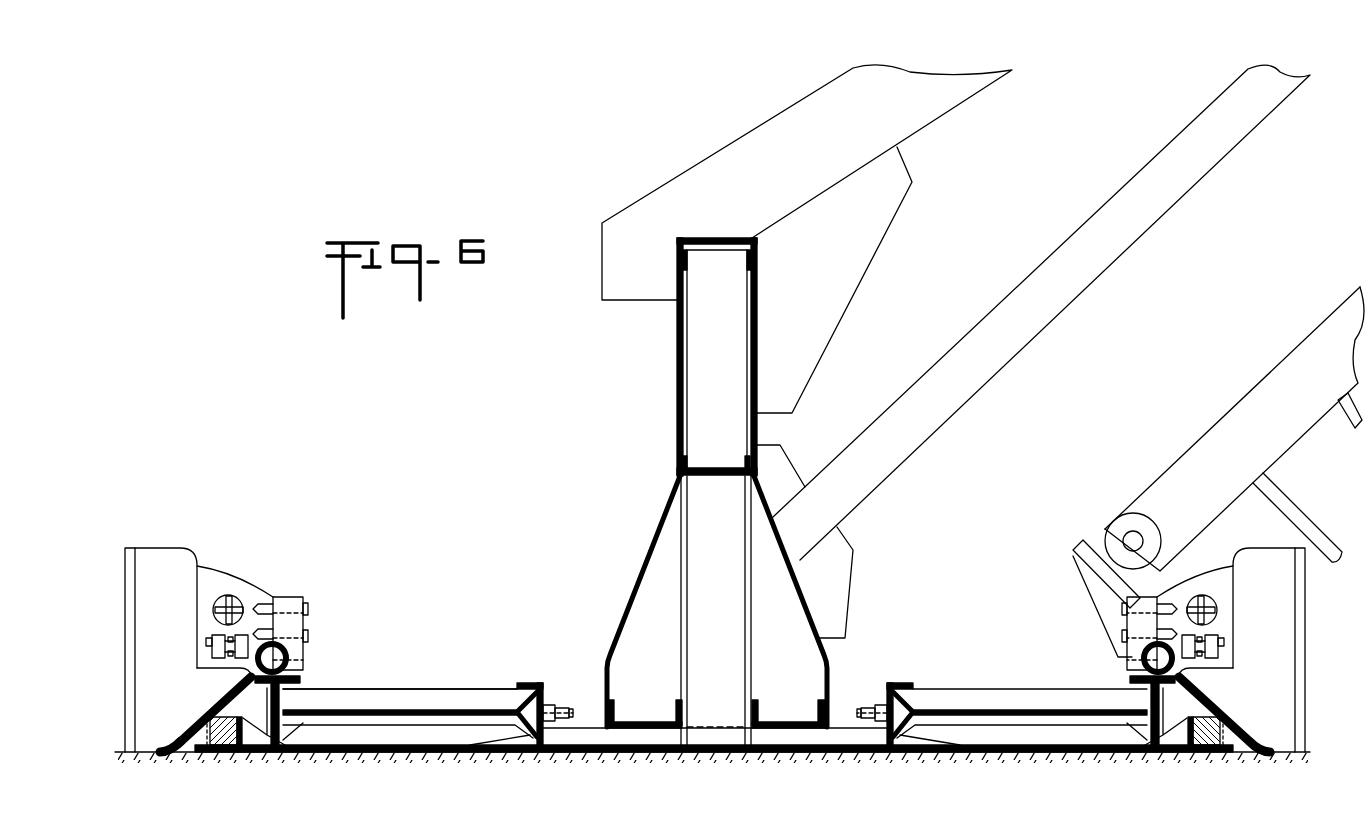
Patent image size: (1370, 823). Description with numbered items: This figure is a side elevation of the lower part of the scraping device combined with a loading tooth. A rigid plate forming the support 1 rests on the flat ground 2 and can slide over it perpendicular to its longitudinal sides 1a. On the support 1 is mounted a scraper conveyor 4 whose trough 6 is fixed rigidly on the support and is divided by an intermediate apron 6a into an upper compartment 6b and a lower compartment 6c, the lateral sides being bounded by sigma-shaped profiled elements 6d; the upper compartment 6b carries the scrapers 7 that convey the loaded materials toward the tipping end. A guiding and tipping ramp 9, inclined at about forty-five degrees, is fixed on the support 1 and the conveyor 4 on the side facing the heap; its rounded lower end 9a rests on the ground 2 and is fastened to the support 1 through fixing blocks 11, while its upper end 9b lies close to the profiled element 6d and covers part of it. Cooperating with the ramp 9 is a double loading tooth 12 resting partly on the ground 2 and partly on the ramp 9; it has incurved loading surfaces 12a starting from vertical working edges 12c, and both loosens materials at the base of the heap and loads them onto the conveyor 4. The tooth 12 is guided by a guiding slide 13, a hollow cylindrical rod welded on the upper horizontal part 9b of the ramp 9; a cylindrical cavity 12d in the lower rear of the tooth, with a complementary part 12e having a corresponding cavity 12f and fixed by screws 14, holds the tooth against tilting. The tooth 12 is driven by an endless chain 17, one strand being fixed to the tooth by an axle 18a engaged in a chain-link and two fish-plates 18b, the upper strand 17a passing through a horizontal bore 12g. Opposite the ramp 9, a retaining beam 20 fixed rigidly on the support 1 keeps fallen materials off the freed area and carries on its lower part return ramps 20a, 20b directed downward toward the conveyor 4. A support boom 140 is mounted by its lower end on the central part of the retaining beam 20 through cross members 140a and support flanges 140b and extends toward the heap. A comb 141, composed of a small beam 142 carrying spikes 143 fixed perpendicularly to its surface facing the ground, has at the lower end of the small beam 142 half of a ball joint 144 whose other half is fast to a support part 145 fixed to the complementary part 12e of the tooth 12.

The support 1 is at (412, 749).
The longitudinal sides of the support 1a is at (218, 752).
The ground 2 is at (465, 755).
The scraper conveyor 4 is at (410, 686).
The trough 6 is at (496, 703).
The intermediate apron 6a is at (345, 710).
The upper compartment 6b is at (462, 688).
The lower compartment 6c is at (365, 725).
The sigma-shaped profiled element 6d is at (527, 682).
The scrapers 7 is at (428, 732).
The guiding and tipping ramp 9 is at (202, 715).
The lower end of the ramp 9a is at (172, 750).
The upper end of the ramp 9b is at (300, 680).
The fixing blocks 11 is at (232, 749).
The double loading tooth 12 is at (199, 557).
The incurved loading surface 12a is at (206, 590).
The working edge 12c is at (122, 578).
The cylindrical cavity 12d is at (247, 668).
The complementary part 12e is at (307, 620).
The cavity of the complementary part 12f is at (292, 650).
The horizontal bore 12g is at (212, 603).
The guiding slide 13 is at (260, 603).
The screws 14 is at (285, 630).
The endless chain 17 is at (236, 597).
The upper strand of the chain 17a is at (243, 600).
The axle 18a is at (212, 639).
The fish-plates 18b is at (240, 660).
The retaining beam 20 is at (673, 469).
The return ramp 20a is at (629, 606).
The return ramp 20b is at (806, 600).
The support boom 140 is at (719, 152).
The cross members 140a is at (903, 401).
The support flanges 140b is at (849, 256).
The comb 141 is at (1243, 343).
The small beam 142 is at (1196, 443).
The spikes 143 is at (1294, 508).
The ball joint 144 is at (1107, 527).
The support part 145 is at (1100, 597).